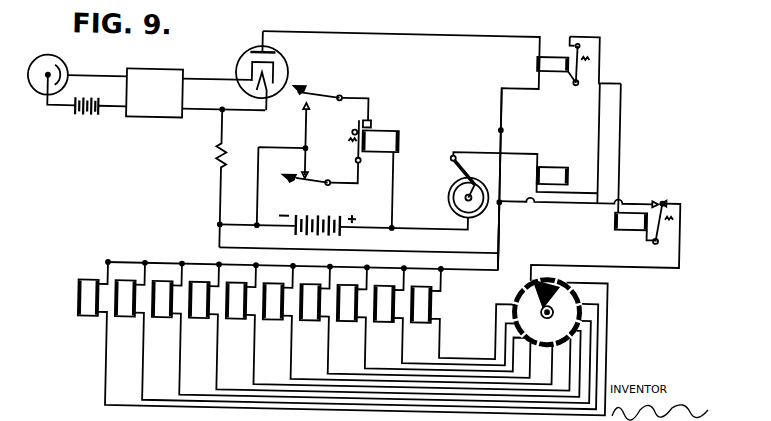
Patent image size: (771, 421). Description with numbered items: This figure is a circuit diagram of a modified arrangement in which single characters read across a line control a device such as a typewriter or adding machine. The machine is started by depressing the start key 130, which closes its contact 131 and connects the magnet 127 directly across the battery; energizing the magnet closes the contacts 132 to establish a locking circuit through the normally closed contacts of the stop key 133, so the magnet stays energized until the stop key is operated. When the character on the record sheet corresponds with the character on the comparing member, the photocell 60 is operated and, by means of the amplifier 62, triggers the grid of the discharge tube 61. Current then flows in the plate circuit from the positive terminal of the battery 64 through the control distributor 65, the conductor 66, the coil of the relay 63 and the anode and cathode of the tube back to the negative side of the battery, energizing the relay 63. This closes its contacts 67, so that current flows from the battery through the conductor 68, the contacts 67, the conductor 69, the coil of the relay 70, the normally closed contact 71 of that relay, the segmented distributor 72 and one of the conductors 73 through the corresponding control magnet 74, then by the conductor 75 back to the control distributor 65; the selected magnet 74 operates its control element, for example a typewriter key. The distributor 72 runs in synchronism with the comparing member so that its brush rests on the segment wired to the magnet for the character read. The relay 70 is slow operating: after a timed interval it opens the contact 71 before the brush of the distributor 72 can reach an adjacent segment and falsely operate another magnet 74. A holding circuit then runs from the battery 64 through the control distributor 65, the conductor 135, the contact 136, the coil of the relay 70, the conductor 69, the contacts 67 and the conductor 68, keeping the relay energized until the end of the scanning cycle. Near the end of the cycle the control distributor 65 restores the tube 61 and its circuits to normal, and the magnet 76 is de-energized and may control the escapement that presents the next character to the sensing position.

The photocell 60 is at (31, 59).
The discharge tube 61 is at (233, 52).
The amplifier 62 is at (137, 68).
The relay 63 is at (541, 48).
The battery 64 is at (311, 213).
The control distributor 65 is at (444, 189).
The conductor 66 is at (495, 122).
The contacts 67 is at (567, 35).
The conductor 68 is at (397, 245).
The conductor 69 is at (615, 146).
The relay 70 is at (627, 216).
The normally closed contact 71 is at (662, 190).
The segmented distributor 72 is at (519, 284).
The conductors 73 is at (512, 341).
The control magnet 74 is at (86, 299).
The conductor 75 is at (496, 228).
The magnet 76 is at (543, 158).
The magnet 127 is at (380, 129).
The start key 130 is at (312, 89).
The contact 131 is at (296, 100).
The contacts 132 is at (359, 110).
The stop key 133 is at (290, 178).
The conductor 135 is at (527, 197).
The contact 136 is at (648, 189).